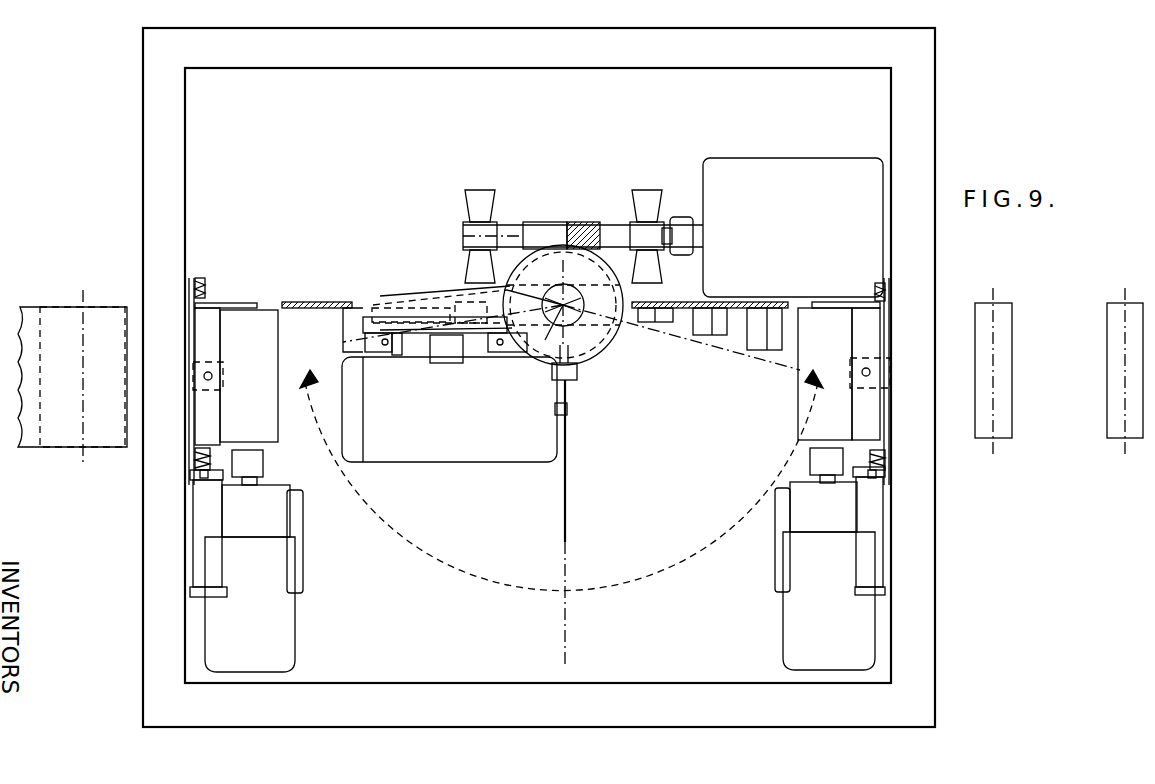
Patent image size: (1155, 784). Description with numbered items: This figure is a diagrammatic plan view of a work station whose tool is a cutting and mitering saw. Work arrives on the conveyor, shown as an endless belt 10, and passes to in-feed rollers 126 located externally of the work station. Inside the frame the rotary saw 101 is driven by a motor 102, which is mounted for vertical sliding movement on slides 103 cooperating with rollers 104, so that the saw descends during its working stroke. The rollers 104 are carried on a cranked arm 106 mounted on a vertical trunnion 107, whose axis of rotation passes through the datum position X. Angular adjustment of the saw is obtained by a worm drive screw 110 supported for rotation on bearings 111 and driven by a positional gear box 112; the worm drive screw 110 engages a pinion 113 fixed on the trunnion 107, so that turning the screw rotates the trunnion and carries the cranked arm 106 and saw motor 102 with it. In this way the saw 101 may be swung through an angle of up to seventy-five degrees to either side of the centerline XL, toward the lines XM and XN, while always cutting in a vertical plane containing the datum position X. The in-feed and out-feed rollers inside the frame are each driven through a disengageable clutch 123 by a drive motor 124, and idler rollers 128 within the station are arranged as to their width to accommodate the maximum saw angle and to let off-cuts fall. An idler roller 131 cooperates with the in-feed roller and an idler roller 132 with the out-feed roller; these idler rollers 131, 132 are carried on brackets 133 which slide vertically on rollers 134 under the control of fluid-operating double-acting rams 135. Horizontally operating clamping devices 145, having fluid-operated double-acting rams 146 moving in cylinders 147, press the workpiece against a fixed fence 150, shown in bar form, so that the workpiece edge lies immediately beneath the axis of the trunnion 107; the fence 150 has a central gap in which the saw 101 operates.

The endless belt 10 is at (23, 318).
The circular saw 101 is at (568, 481).
The motor 102 is at (449, 409).
The slides 103 is at (400, 343).
The rollers 104 is at (366, 341).
The cranked arm 106 is at (490, 300).
The vertical trunnion 107 is at (585, 335).
The worm drive screw 110 is at (537, 237).
The bearings 111 is at (478, 200).
The positional gear box 112 is at (793, 227).
The pinion 113 is at (570, 375).
The disengageable clutch 123 is at (255, 463).
The drive motor 124 is at (258, 640).
The in-feed rollers 126 is at (1115, 322).
The idler rollers 128 is at (757, 323).
The idler roller 131 is at (837, 342).
The idler roller 132 is at (233, 340).
The brackets 133 is at (217, 306).
The rollers 134 is at (198, 280).
The fluid-operating double-acting rams 135 is at (196, 385).
The horizontally operating clamping devices 145 is at (208, 553).
The fluid-operated double-acting rams 146 is at (192, 478).
The cylinders 147 is at (210, 590).
The fixed fence 150 is at (306, 300).